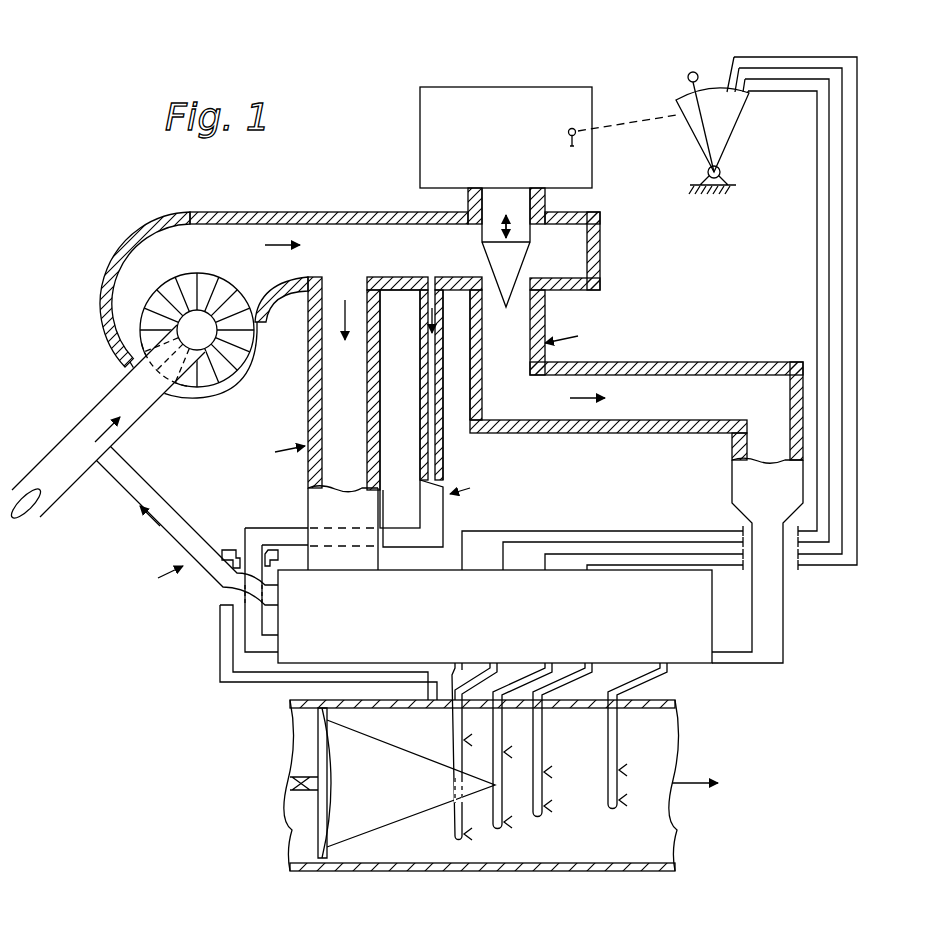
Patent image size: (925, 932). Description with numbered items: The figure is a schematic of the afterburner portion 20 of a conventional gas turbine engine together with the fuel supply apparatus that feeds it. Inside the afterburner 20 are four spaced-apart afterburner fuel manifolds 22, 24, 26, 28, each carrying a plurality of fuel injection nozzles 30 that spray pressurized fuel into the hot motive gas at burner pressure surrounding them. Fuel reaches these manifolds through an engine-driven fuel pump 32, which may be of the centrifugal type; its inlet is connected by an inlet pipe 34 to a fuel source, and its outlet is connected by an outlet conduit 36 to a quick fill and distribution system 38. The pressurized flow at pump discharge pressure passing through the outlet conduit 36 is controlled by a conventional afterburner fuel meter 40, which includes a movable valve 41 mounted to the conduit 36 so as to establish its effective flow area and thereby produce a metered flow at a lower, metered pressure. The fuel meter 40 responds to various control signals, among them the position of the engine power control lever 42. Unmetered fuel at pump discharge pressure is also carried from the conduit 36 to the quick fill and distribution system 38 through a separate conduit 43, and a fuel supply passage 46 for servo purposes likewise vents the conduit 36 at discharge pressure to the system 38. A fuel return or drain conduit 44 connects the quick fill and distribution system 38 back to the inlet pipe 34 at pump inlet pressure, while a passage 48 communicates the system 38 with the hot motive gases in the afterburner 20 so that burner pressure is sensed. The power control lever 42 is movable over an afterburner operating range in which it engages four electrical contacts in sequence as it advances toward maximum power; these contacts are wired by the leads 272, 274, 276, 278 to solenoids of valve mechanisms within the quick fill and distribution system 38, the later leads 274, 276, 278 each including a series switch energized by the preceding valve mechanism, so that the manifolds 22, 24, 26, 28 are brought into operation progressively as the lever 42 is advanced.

The afterburner portion 20 is at (413, 873).
The afterburner fuel manifold 22 is at (455, 832).
The afterburner fuel manifold 24 is at (500, 826).
The afterburner fuel manifold 26 is at (540, 815).
The afterburner fuel manifold 28 is at (612, 808).
The fuel injection nozzles 30 is at (466, 740).
The fuel pump 32 is at (98, 310).
The inlet pipe 34 is at (78, 425).
The outlet conduit 36 is at (345, 212).
The quick fill and distribution system 38 is at (500, 655).
The afterburner fuel meter 40 is at (575, 95).
The movable valve 41 is at (517, 258).
The engine power control lever 42 is at (693, 72).
The conduit 43 is at (307, 398).
The fuel return or drain conduit 44 is at (200, 578).
The fuel supply passage 46 is at (443, 460).
The passage 48 is at (255, 683).
The lead 272 is at (735, 55).
The lead 274 is at (762, 62).
The lead 276 is at (800, 72).
The lead 278 is at (838, 62).